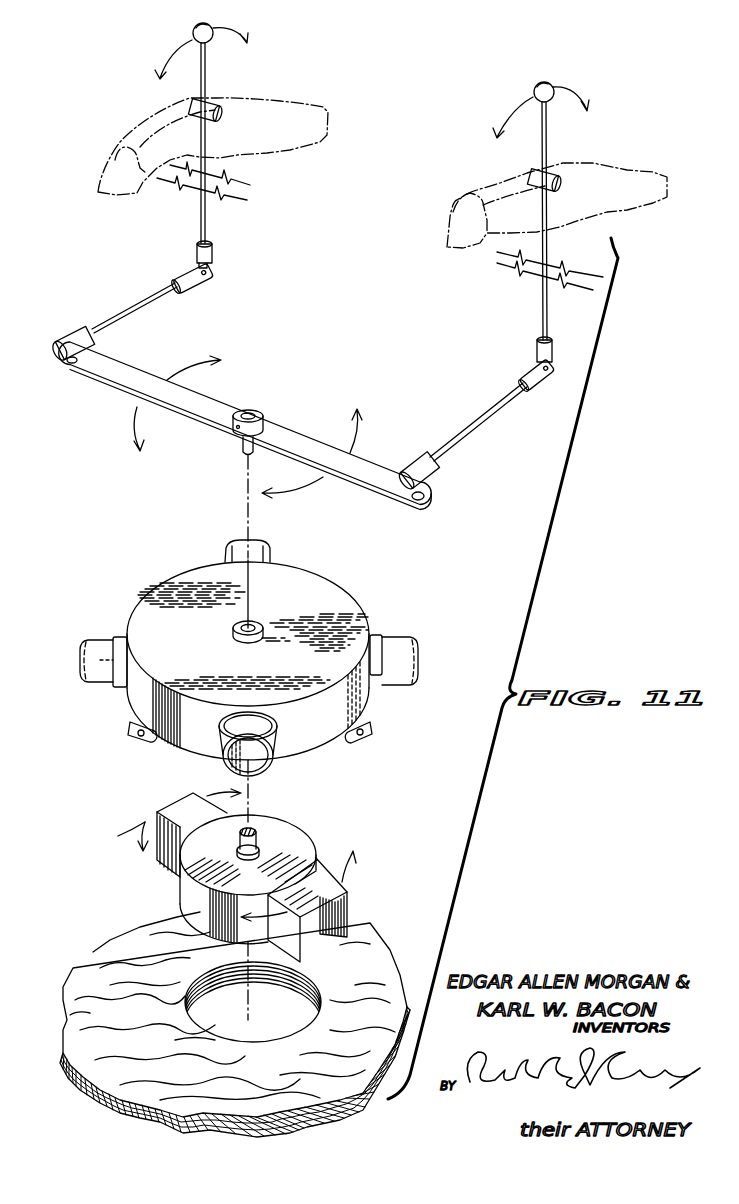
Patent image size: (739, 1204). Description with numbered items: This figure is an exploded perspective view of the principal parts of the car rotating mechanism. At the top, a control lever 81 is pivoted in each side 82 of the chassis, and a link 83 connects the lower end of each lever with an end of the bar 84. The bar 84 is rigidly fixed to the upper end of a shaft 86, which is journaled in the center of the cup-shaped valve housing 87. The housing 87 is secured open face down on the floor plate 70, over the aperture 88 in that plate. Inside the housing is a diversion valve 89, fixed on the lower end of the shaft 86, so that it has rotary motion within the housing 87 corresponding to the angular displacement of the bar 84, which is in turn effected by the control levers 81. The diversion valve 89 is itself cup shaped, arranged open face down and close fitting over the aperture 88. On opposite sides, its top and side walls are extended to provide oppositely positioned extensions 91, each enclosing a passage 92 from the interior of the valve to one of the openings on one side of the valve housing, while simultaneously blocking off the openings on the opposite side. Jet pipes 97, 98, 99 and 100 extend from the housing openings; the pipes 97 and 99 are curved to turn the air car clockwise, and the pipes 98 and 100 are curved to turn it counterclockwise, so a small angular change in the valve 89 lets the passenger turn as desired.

The floor plate 70 is at (100, 972).
The control lever 81 is at (548, 140).
The side of the chassis 82 is at (480, 196).
The link 83 is at (490, 413).
The bar 84 is at (203, 403).
The shaft 86 is at (240, 453).
The valve housing 87 is at (323, 586).
The aperture 88 is at (290, 1013).
The diversion valve 89 is at (300, 837).
The extension 91 is at (183, 803).
The passage 92 is at (118, 836).
The jet pipe 97 is at (98, 677).
The jet pipe 98 is at (260, 545).
The jet pipe 99 is at (398, 643).
The jet pipe 100 is at (277, 763).